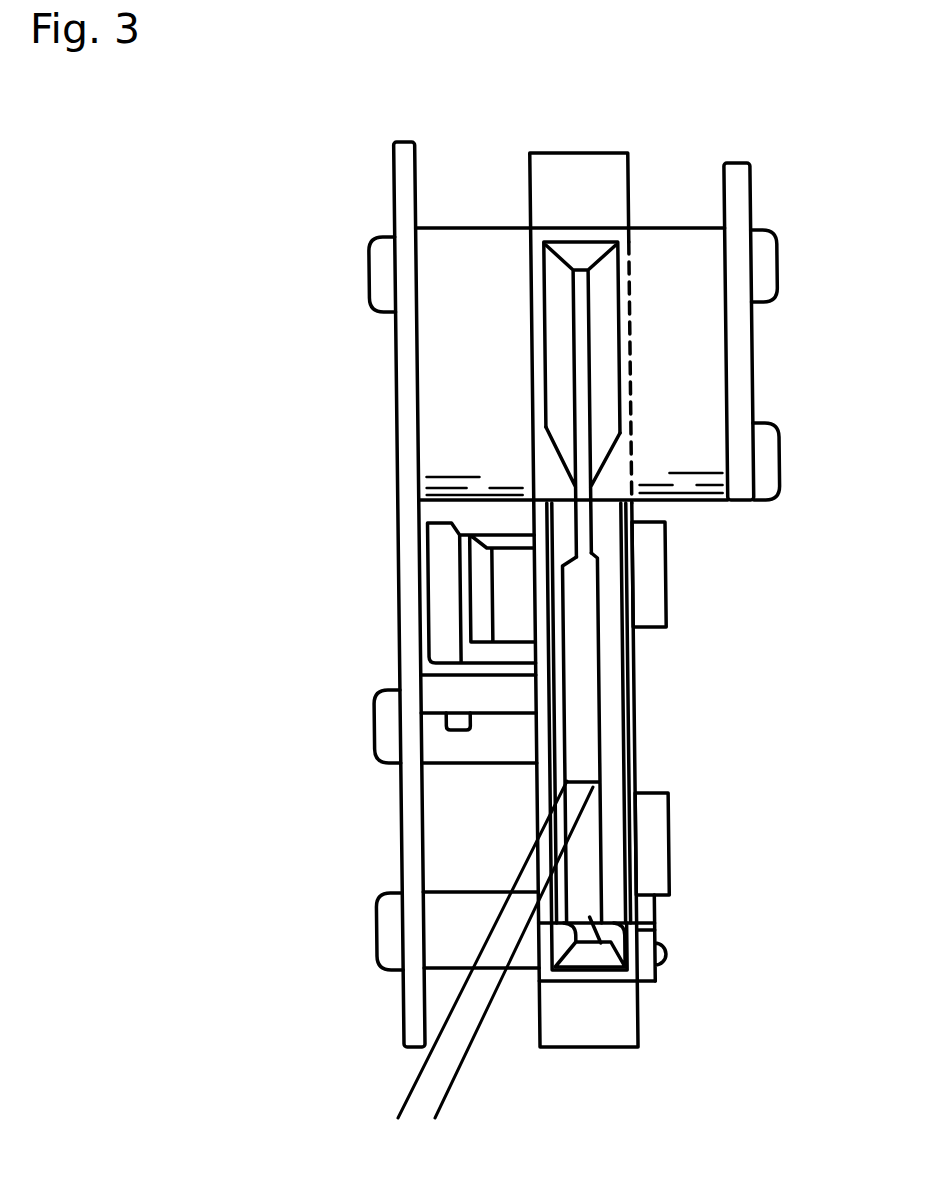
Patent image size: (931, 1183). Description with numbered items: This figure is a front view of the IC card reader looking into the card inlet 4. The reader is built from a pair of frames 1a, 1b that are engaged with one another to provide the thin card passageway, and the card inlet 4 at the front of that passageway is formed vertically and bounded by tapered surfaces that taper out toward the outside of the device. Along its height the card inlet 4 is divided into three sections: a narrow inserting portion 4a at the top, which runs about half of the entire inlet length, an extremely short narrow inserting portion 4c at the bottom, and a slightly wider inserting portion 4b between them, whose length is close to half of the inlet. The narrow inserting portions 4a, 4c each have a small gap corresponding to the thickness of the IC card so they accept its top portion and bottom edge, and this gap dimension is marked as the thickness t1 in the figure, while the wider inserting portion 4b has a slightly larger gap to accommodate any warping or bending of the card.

The frame 1a is at (702, 381).
The frame 1b is at (447, 390).
The card inlet 4 is at (829, 595).
The narrow inserting portion 4a is at (582, 390).
The wider inserting portion 4b is at (583, 700).
The narrow inserting portion 4c is at (653, 983).
The thickness t1 is at (370, 1090).